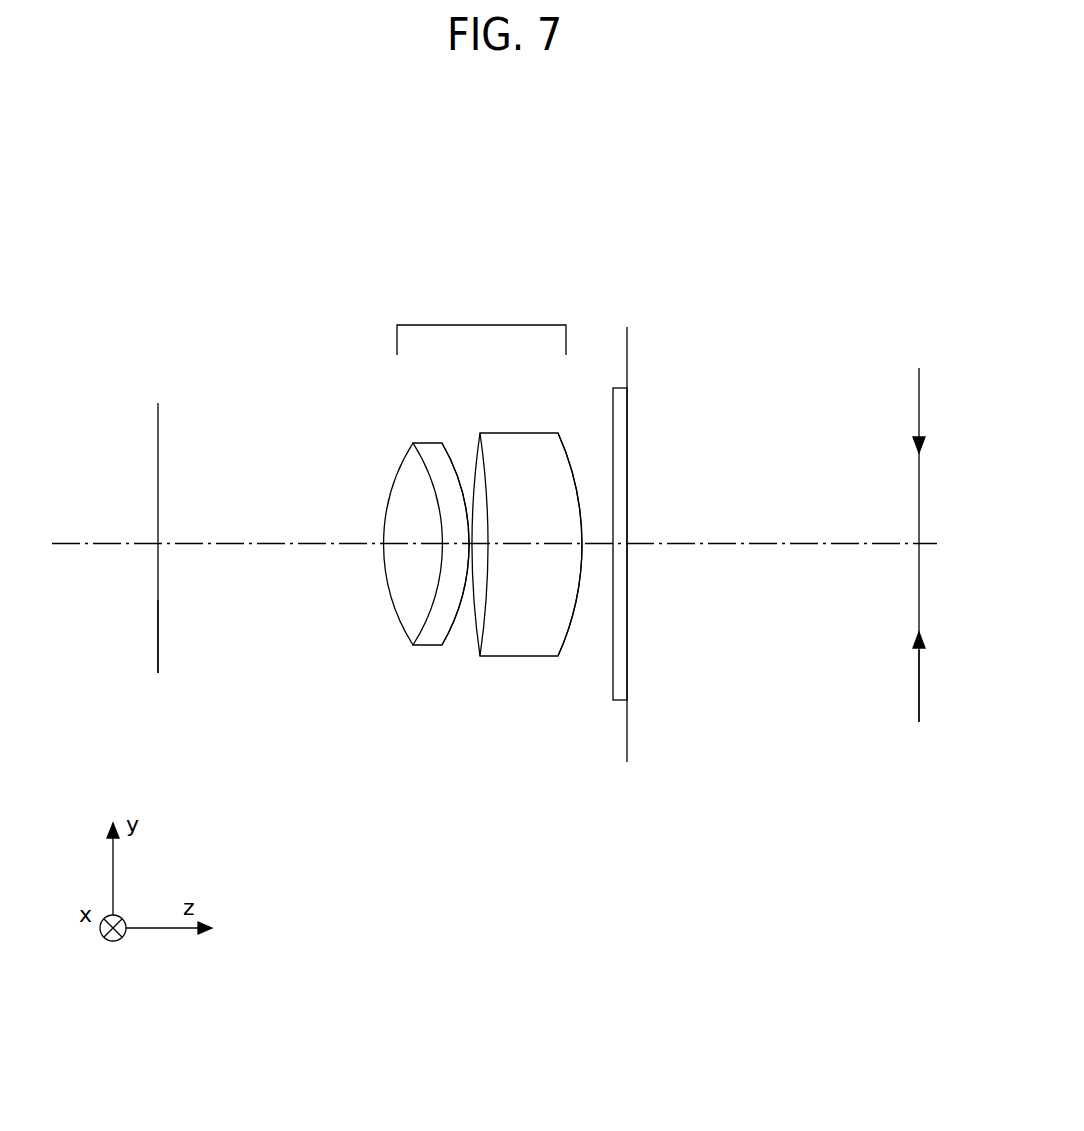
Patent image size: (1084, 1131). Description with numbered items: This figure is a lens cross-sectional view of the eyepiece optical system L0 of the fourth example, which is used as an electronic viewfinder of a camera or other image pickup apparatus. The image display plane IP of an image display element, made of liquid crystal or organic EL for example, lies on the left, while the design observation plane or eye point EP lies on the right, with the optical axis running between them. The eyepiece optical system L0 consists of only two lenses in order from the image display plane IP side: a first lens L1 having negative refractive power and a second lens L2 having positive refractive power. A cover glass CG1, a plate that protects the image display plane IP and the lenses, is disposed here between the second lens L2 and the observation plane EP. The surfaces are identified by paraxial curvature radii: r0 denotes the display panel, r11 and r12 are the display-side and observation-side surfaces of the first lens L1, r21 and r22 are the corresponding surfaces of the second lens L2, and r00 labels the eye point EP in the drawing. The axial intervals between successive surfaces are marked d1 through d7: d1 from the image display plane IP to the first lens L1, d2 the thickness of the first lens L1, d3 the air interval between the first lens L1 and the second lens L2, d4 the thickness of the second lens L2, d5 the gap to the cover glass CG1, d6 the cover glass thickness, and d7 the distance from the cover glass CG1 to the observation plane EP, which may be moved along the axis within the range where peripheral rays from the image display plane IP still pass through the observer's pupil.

The image display plane IP is at (158, 440).
The eyepiece optical system L0 is at (481, 323).
The first lens L1 is at (426, 458).
The second lens L2 is at (507, 448).
The cover glass CG1 is at (617, 402).
The observation plane (eye point) EP is at (936, 545).
The display panel surface r0 is at (158, 673).
The image-display-side surface of the first lens r11 is at (417, 627).
The observation-side surface of the first lens r12 is at (450, 628).
The image-display-side surface of the second lens r21 is at (475, 635).
The observation-side surface of the second lens r22 is at (567, 635).
The eye point surface r00 is at (919, 665).
The first axial surface interval d1 is at (285, 560).
The second axial surface interval d2 is at (490, 572).
The interval between first and second lenses d3 is at (473, 568).
The fourth axial surface interval (second lens thickness) d4 is at (527, 560).
The fifth axial surface interval d5 is at (584, 546).
The sixth axial surface interval d6 is at (627, 560).
The seventh axial surface interval d7 is at (773, 560).